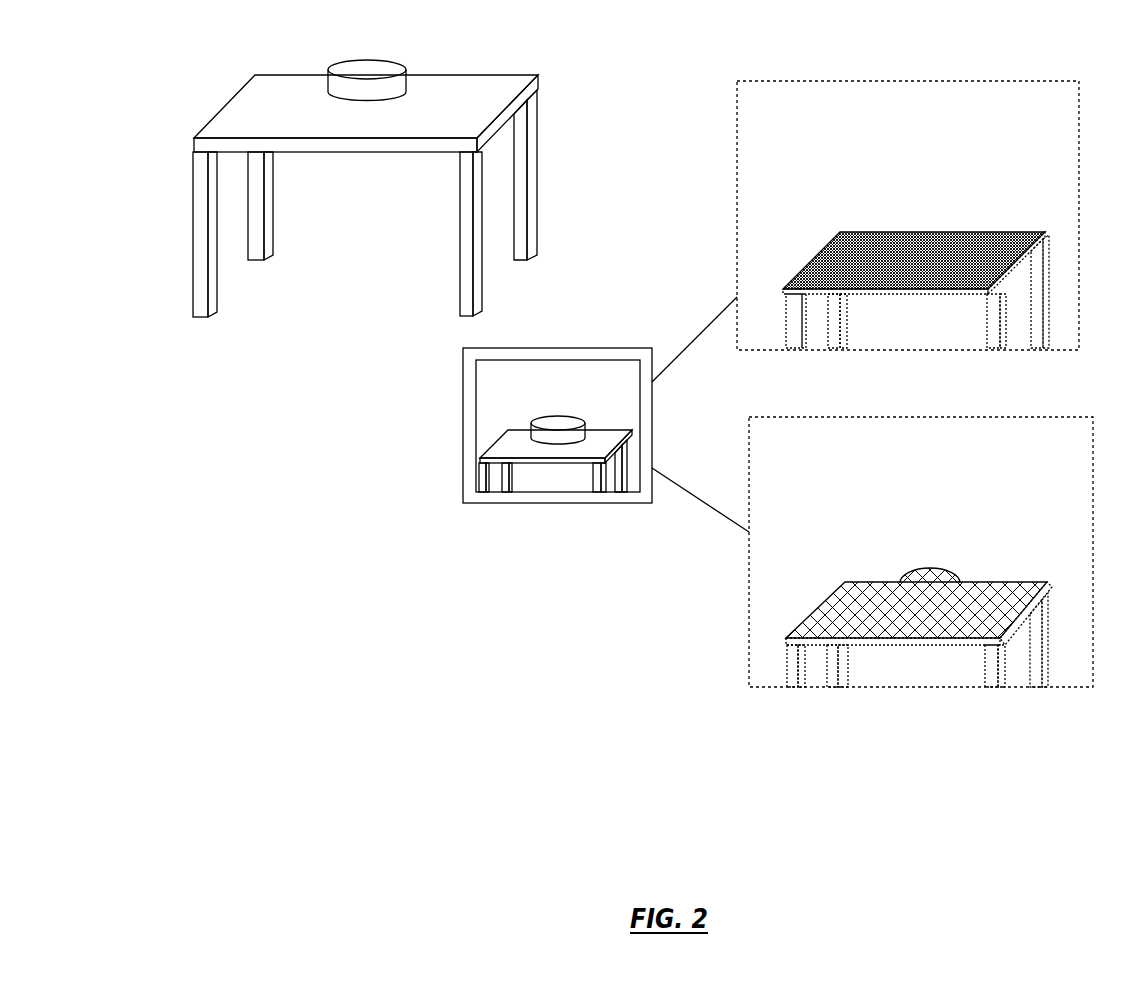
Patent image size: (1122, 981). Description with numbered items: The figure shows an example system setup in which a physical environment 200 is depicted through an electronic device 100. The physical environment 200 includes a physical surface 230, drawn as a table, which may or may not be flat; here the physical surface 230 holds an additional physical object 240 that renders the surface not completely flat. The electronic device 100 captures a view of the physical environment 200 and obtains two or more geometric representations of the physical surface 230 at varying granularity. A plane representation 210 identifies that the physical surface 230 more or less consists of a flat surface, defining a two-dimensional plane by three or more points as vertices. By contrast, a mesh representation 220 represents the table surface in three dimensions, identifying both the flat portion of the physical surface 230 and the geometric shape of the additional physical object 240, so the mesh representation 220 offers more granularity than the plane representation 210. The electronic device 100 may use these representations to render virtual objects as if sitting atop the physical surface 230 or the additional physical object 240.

The physical environment 200 is at (341, 165).
The physical surface 230 is at (230, 128).
The additional physical object 240 is at (408, 63).
The electronic device 100 is at (603, 503).
The plane representation 210 is at (858, 232).
The mesh representation 220 is at (890, 582).